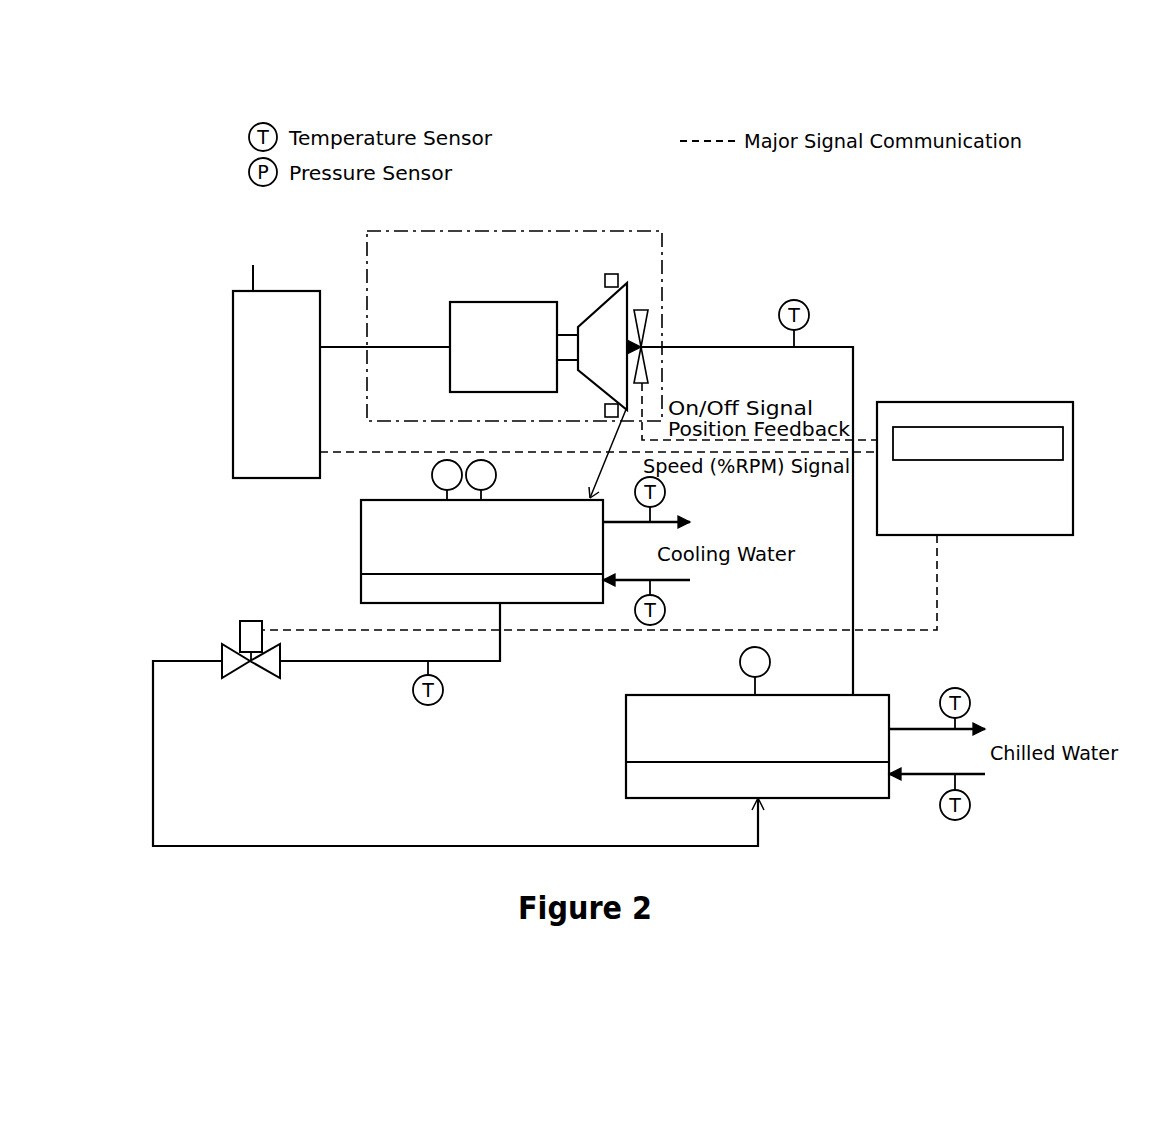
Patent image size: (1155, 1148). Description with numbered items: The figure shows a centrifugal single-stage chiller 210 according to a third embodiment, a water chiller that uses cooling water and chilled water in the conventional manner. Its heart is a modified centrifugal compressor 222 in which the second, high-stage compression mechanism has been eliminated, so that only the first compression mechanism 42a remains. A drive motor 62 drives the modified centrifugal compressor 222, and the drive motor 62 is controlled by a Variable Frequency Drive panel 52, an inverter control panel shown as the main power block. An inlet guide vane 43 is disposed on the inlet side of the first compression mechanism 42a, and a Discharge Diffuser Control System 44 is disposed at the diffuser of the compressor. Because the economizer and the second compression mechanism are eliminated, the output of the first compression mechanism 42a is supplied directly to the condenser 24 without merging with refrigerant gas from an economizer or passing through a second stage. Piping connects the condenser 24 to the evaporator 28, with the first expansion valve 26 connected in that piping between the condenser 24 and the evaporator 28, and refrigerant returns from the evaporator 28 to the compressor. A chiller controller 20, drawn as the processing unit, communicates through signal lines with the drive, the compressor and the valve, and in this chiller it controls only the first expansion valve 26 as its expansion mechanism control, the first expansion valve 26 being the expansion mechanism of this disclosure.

The centrifugal single-stage chiller 210 is at (1050, 208).
The modified centrifugal compressor 222 is at (528, 228).
The drive motor 62 is at (450, 363).
The 1st compression mechanism 42a is at (604, 296).
The Discharge Diffuser Control System 44 is at (612, 274).
The inlet guide vane 43 is at (648, 318).
The Variable Frequency Drive panel 52 is at (232, 455).
The chiller controller 20 is at (1075, 435).
The condenser 24 is at (361, 550).
The 1st expansion valve 26 is at (222, 672).
The evaporator 28 is at (865, 695).